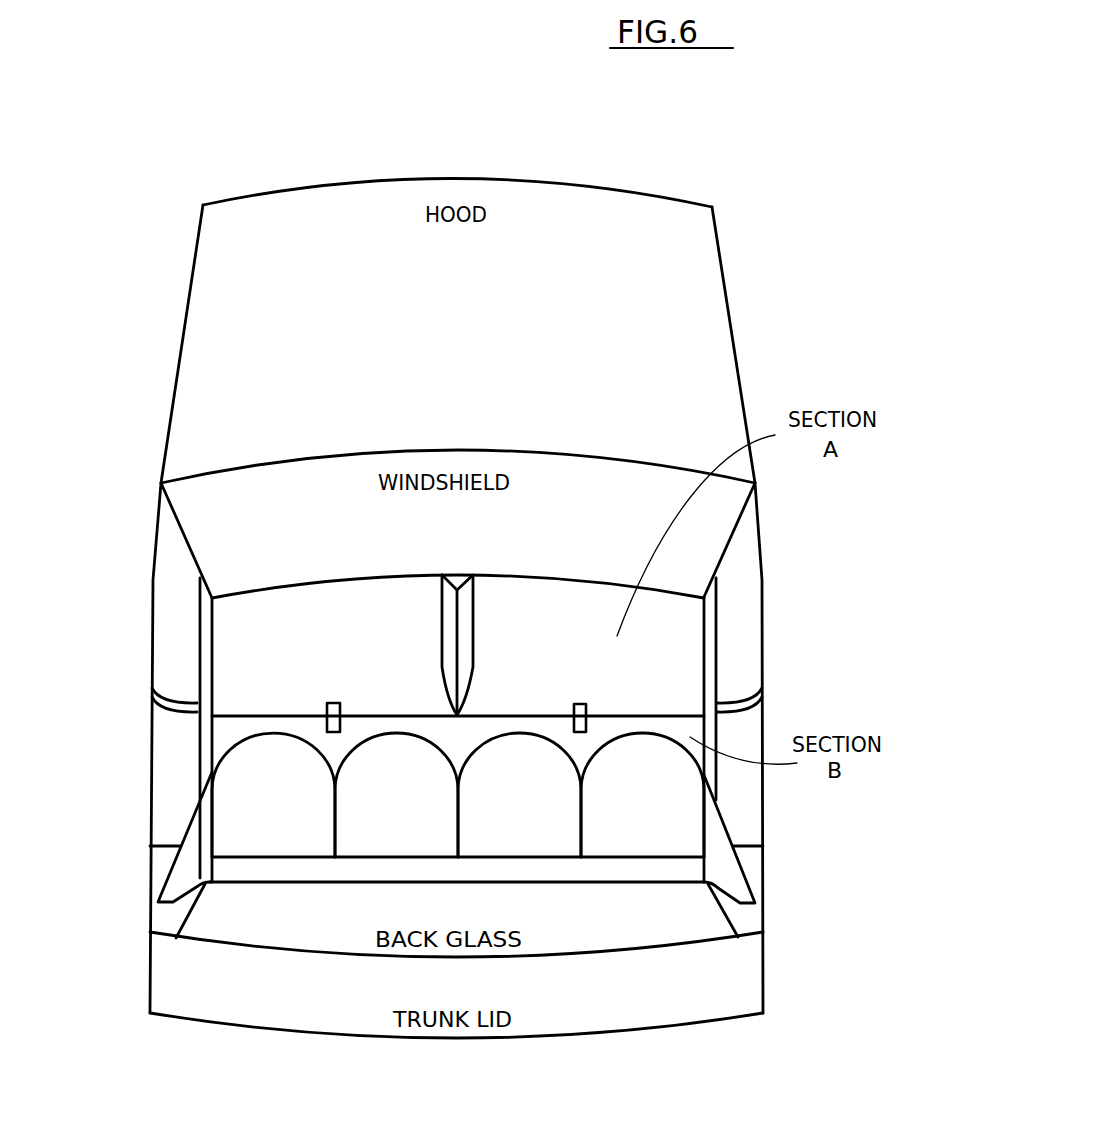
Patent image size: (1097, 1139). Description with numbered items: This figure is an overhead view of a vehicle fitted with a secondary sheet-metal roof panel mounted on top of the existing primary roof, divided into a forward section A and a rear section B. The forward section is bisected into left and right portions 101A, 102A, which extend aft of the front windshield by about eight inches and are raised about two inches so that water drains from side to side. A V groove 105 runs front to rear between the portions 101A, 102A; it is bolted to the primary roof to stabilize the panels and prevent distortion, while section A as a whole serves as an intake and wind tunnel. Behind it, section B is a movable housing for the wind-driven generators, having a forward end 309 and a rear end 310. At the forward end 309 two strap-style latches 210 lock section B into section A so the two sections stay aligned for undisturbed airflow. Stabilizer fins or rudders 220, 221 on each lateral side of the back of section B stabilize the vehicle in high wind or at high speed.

The left portion of forward section 101A is at (200, 631).
The right portion of forward section 102A is at (704, 628).
The V groove 105 is at (458, 583).
The latches 210 is at (327, 703).
The forward end of section B 309 is at (240, 717).
The rear end of section B 310 is at (283, 858).
The stabilizer fin 220 is at (158, 880).
The right sail panel 221 is at (743, 877).